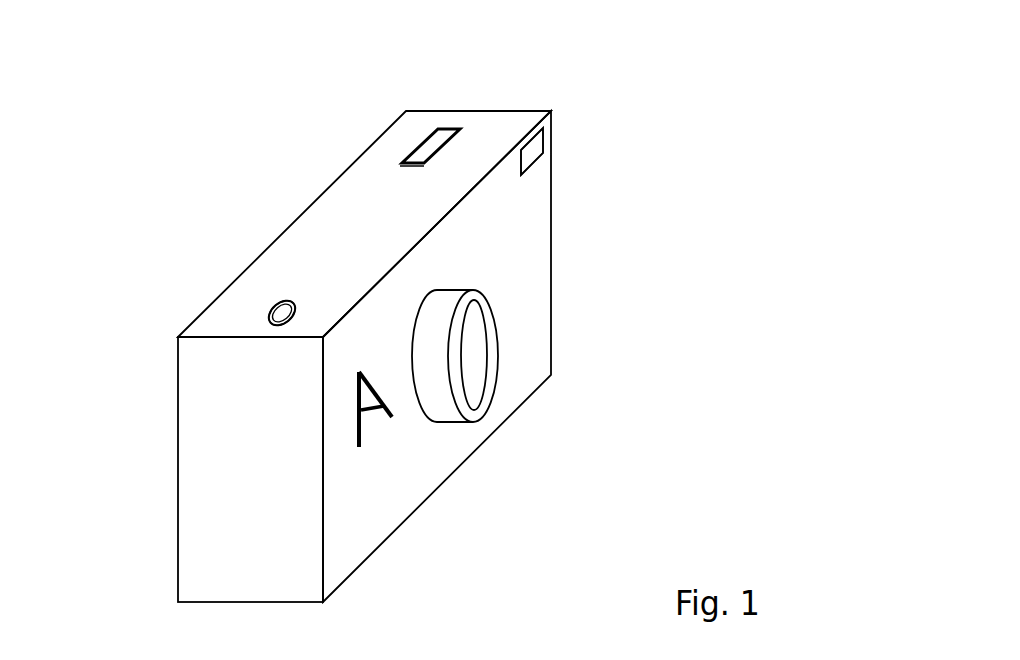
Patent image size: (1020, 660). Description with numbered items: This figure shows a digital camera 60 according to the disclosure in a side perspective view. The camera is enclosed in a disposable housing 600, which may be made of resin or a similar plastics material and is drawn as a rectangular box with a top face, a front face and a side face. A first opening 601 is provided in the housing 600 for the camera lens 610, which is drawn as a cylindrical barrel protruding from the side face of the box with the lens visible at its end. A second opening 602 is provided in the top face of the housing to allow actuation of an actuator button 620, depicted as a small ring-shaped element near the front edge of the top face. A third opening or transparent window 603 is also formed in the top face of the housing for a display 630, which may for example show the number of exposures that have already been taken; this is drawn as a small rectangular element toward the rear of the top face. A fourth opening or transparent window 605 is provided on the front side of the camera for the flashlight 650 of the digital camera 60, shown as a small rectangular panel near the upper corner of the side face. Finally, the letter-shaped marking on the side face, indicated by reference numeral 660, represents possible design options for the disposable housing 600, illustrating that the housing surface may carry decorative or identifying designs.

The digital camera 60 is at (634, 222).
The disposable housing 600 is at (363, 560).
The first opening 601 is at (442, 422).
The second opening 602 is at (268, 313).
The transparent window 603 is at (407, 158).
The transparent window 605 is at (547, 138).
The camera lens 610 is at (467, 347).
The actuator button 620 is at (280, 313).
The display 630 is at (437, 138).
The flashlight 650 is at (537, 157).
The design options 660 is at (380, 432).